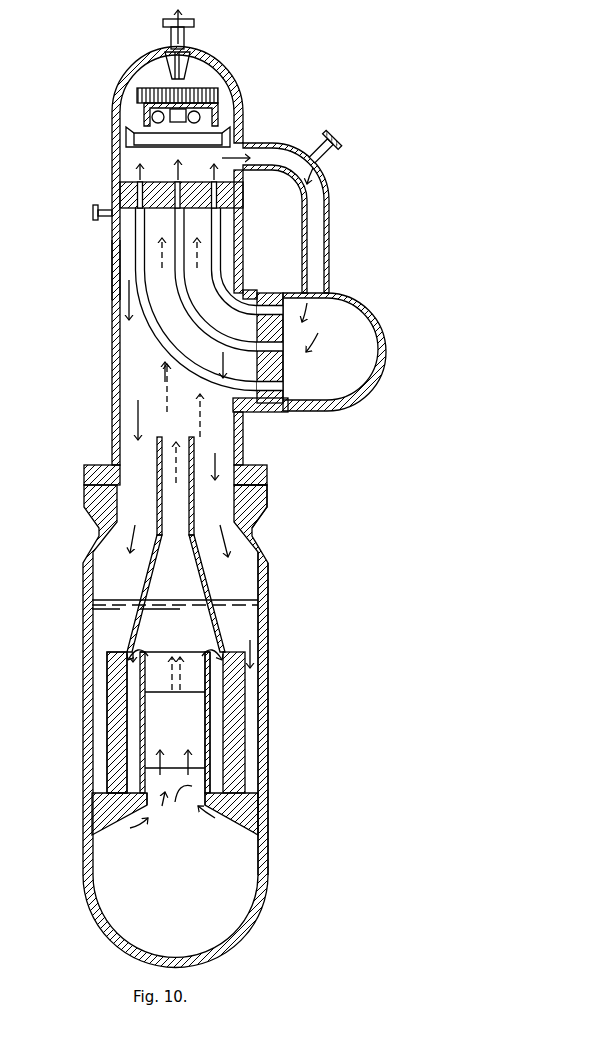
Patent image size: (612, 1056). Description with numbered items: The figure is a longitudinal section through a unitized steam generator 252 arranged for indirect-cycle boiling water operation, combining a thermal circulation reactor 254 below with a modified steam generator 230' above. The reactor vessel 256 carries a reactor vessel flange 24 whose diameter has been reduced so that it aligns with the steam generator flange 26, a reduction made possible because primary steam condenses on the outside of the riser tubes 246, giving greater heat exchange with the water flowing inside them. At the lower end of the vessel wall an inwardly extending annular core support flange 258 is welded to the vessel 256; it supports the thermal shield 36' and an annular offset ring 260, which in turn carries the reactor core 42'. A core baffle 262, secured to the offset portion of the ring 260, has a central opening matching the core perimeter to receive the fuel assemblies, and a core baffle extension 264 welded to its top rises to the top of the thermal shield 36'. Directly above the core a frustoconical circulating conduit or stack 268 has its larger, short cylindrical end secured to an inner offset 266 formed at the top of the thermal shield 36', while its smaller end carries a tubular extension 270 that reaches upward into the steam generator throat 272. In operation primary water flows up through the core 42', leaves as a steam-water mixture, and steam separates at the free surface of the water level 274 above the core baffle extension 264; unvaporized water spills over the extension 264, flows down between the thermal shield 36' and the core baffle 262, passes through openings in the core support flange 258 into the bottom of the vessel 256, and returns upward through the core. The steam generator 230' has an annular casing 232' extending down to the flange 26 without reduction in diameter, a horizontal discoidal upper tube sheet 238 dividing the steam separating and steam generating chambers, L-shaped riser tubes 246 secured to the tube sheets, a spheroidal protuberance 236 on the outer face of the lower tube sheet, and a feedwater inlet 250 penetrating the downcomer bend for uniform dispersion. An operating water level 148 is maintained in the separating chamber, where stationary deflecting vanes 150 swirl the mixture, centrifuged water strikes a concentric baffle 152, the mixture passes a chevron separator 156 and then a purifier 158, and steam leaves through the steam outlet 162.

The steam outlet 162 is at (168, 32).
The purifier 158 is at (190, 68).
The chevron separator 156 is at (137, 98).
The baffle 152 is at (219, 108).
The deflecting vanes 150 is at (159, 123).
The water level 148 is at (145, 113).
The upper tube sheet 238 is at (112, 185).
The feedwater inlet 250 is at (328, 165).
The steam generator 230' is at (157, 301).
The annular casing 232' is at (91, 270).
The riser tubes 246 is at (199, 322).
The protuberance 236 is at (387, 340).
The steam generator throat 272 is at (242, 437).
The steam generator flange 26 is at (267, 473).
The reactor vessel flange 24 is at (267, 495).
The tubularly shaped extension 270 is at (192, 522).
The circulating conduit 268 is at (210, 590).
The reactor vessel 256 is at (268, 582).
The water level 274 is at (137, 598).
The thermal circulation reactor 254 is at (84, 613).
The unitized steam generator 252 is at (38, 483).
The inner offset 266 is at (127, 665).
The core baffle extension 264 is at (143, 682).
The core baffle 262 is at (147, 723).
The reactor core 42' is at (254, 722).
The thermal shield 36' is at (206, 722).
The offset ring 260 is at (172, 806).
The core support flange 258 is at (108, 832).